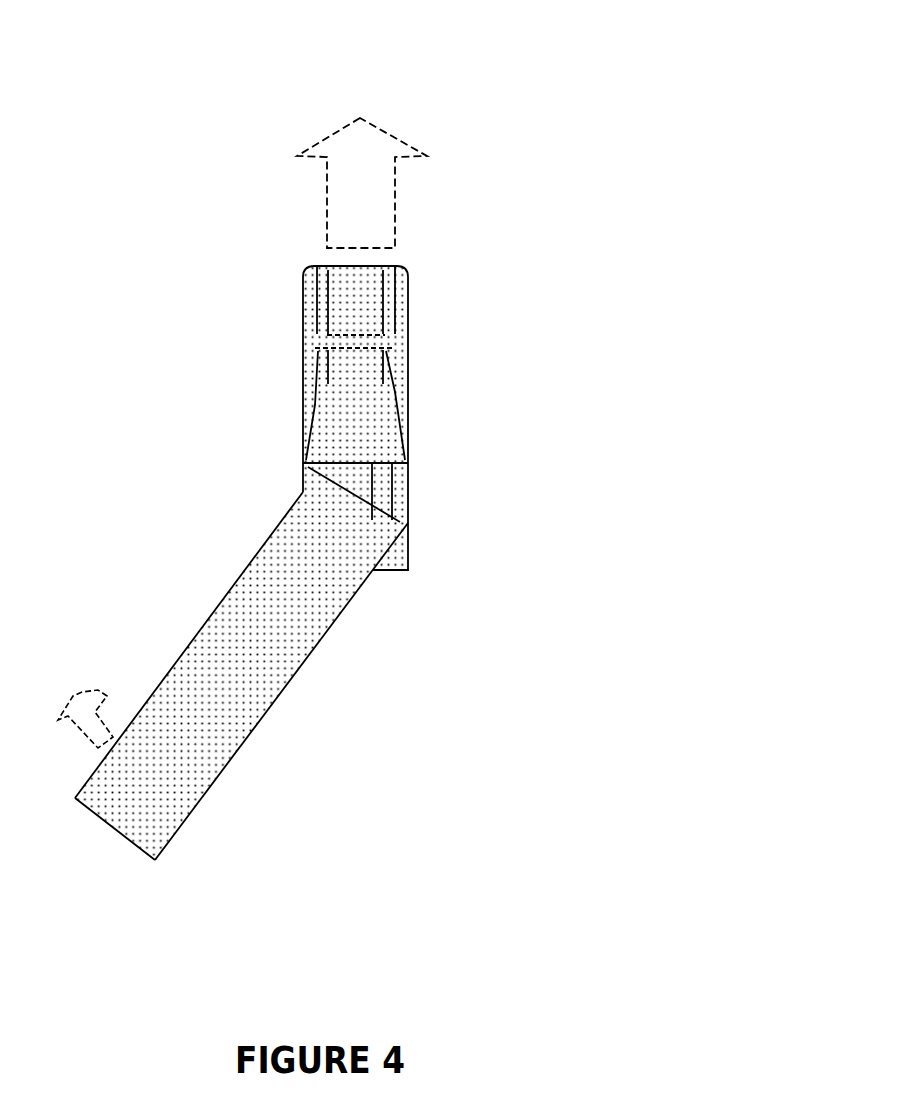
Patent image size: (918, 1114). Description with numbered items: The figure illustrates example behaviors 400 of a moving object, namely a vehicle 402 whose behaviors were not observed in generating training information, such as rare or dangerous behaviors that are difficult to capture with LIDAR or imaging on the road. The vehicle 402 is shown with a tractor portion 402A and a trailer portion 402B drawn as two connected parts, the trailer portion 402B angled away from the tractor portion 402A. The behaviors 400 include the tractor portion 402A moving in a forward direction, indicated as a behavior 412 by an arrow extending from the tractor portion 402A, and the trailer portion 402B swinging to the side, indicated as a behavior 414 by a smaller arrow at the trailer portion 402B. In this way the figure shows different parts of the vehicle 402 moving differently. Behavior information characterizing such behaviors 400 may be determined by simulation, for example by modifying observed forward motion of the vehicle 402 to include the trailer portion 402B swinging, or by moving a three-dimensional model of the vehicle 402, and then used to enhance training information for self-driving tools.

The behaviors 400 is at (380, 61).
The vehicle 402 is at (478, 438).
The tractor portion 402A is at (303, 362).
The trailer portion 402B is at (283, 690).
The behavior 412 is at (395, 231).
The behavior 414 is at (98, 689).